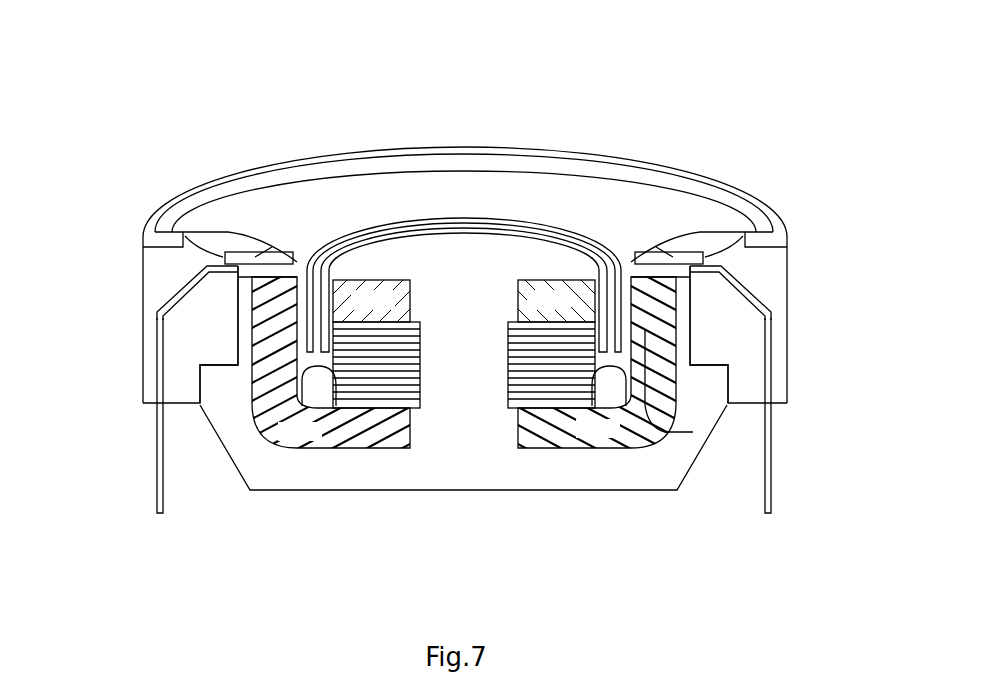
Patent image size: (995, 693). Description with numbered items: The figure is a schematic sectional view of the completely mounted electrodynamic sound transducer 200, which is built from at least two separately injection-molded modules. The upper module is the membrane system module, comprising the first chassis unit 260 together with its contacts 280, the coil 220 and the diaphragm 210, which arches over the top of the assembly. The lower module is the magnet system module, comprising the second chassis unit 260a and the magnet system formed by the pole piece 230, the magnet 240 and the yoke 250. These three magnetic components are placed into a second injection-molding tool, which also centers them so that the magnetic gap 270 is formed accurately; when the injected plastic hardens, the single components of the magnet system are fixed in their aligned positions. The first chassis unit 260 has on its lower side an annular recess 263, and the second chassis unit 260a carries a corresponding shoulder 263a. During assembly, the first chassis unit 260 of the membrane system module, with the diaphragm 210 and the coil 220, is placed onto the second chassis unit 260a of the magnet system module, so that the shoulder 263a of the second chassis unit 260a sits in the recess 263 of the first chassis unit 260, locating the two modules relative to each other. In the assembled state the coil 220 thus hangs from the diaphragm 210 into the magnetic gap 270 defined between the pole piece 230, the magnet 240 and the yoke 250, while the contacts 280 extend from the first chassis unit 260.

The transducer 200 is at (196, 165).
The diaphragm 210 is at (465, 275).
The coil 220 is at (307, 270).
The pole piece 230 is at (464, 293).
The magnet 240 is at (410, 378).
The yoke 250 is at (327, 382).
The first chassis unit 260 is at (143, 296).
The second chassis unit 260a is at (258, 463).
The annular recess 263 is at (222, 356).
The shoulder 263a is at (221, 358).
The magnetic gap 270 is at (327, 380).
The contacts 280 is at (154, 449).